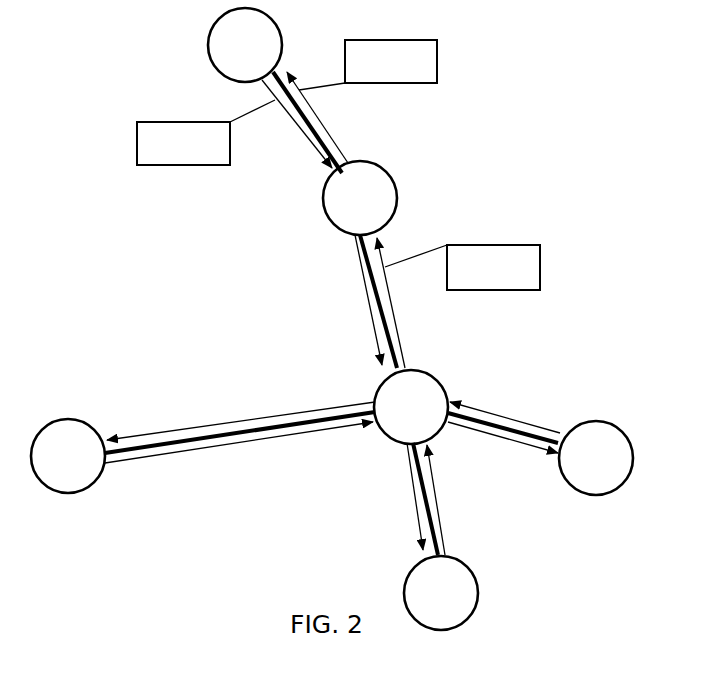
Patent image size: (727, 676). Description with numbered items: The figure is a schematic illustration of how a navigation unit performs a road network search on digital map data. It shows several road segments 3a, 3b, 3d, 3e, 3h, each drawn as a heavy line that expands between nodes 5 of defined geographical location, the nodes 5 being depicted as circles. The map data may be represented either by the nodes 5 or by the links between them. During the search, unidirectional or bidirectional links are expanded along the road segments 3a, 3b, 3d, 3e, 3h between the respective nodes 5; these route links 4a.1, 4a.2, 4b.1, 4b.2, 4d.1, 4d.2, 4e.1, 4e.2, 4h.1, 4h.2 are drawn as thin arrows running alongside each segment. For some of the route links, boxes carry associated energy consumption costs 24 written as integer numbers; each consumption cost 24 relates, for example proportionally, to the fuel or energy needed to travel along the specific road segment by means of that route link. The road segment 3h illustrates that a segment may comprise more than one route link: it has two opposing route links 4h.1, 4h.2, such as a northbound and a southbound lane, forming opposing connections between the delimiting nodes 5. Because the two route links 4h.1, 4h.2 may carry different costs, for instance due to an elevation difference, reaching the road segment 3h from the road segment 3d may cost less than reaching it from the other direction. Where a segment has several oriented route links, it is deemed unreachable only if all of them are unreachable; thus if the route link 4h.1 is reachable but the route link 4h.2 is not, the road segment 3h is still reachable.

The node 5 is at (323, 215).
The road segment 3a is at (220, 435).
The road segment 3b is at (528, 434).
The road segment 3d is at (373, 277).
The road segment 3e is at (425, 503).
The road segment 3h is at (323, 142).
The route link 4a.1 is at (177, 432).
The route link 4a.2 is at (302, 432).
The route link 4b.1 is at (488, 432).
The route link 4b.2 is at (498, 410).
The route link 4d.1 is at (397, 328).
The route link 4d.2 is at (374, 318).
The route link 4e.1 is at (415, 482).
The route link 4e.2 is at (447, 535).
The route link 4h.1 is at (343, 153).
The route link 4h.2 is at (326, 163).
The energy consumption cost 24 is at (437, 40).